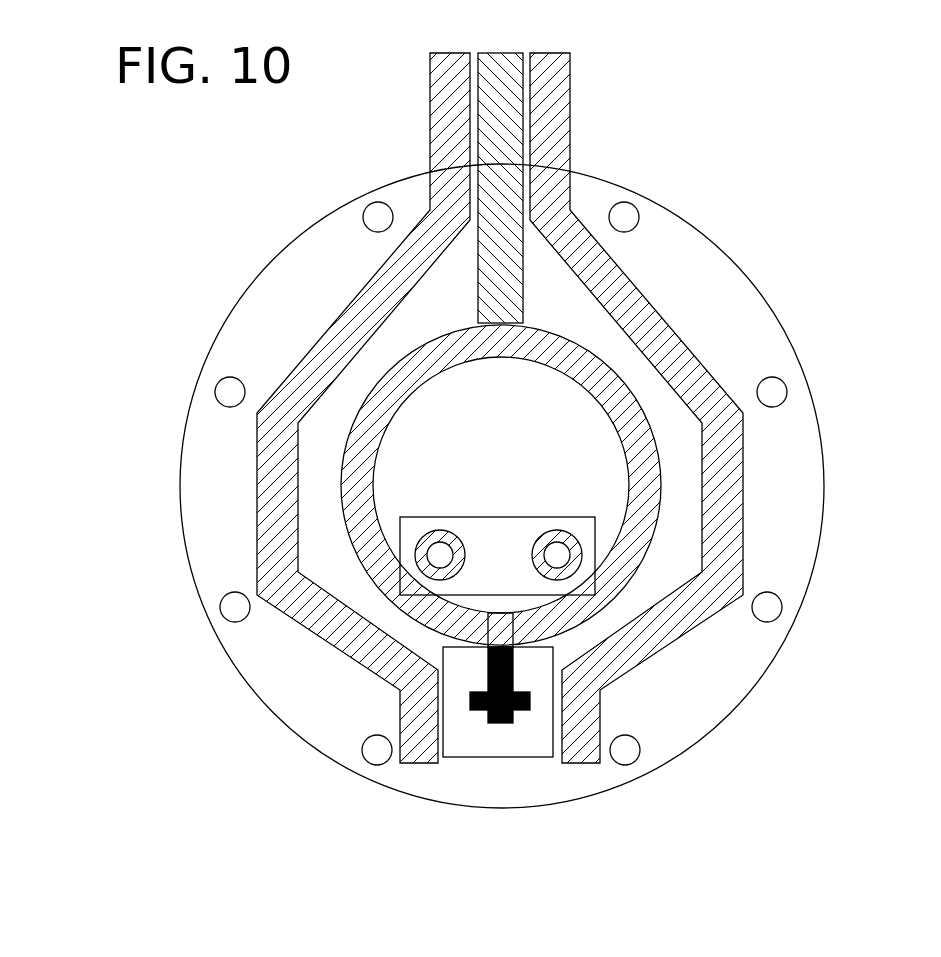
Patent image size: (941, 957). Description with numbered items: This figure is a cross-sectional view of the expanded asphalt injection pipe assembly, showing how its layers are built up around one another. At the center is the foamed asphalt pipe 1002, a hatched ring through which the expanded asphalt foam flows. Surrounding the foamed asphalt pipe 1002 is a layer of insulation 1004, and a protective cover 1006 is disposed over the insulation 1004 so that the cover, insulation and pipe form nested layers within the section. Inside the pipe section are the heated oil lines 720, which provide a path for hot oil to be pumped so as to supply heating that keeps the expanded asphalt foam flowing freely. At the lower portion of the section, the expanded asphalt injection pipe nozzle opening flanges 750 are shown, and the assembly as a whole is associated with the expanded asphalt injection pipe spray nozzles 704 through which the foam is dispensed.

The expanded asphalt injection pipe spray nozzle 704 is at (512, 826).
The heated oil line 720 is at (438, 553).
The expanded asphalt injection pipe nozzle opening flange 750 is at (410, 690).
The foamed asphalt pipe 1002 is at (623, 403).
The insulation 1004 is at (607, 345).
The protective cover 1006 is at (609, 278).